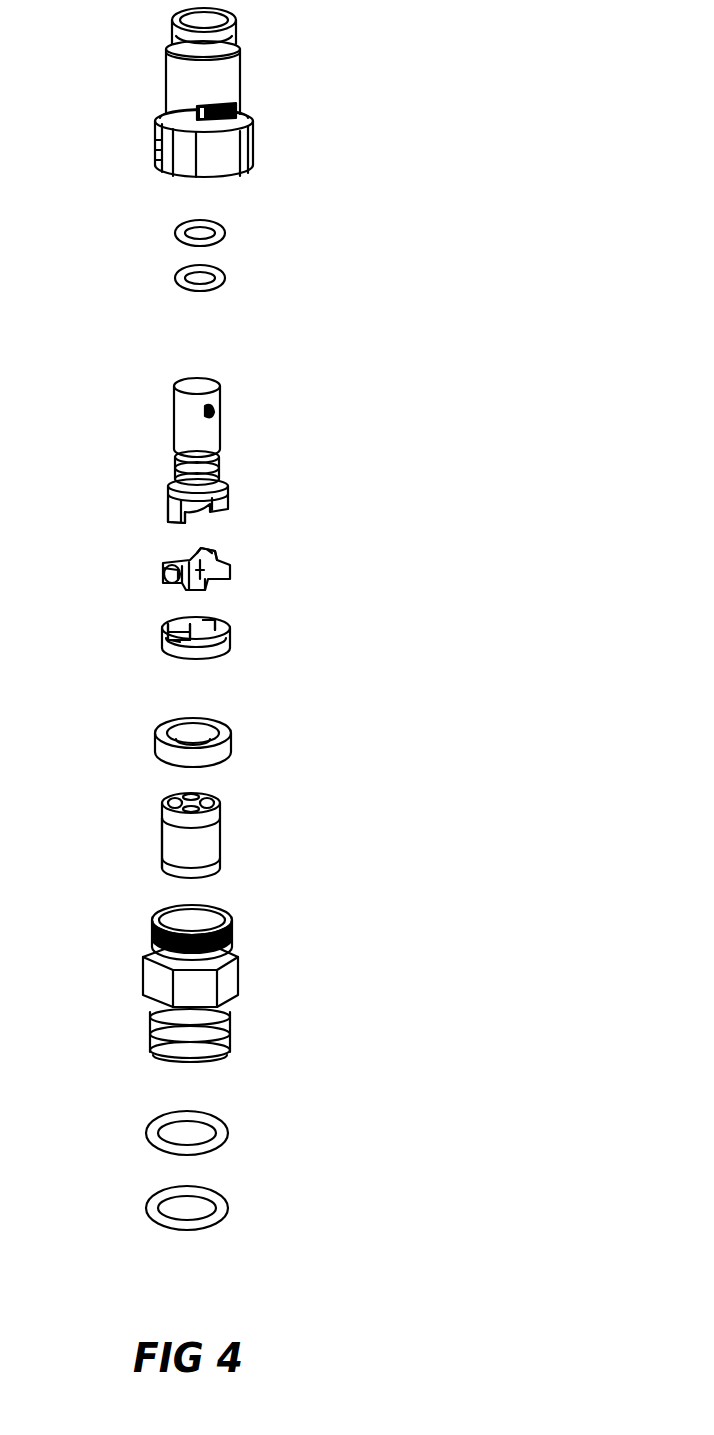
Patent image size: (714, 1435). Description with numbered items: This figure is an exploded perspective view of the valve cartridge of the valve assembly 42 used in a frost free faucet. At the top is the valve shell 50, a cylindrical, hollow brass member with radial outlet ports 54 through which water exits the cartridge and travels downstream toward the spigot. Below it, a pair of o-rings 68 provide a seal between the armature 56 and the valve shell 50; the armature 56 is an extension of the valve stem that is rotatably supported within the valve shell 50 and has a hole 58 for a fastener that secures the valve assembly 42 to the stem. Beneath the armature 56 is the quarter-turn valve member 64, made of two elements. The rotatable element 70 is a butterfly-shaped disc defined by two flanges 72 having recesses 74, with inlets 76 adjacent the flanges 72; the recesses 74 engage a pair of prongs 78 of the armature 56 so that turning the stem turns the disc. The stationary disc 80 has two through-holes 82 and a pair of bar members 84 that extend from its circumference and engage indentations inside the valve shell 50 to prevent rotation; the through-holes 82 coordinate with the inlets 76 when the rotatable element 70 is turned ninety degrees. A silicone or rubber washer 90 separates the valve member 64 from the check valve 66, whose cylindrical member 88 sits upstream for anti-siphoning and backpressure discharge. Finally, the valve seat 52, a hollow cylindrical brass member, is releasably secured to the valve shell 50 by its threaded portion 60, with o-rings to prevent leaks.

The valve assembly 42 is at (461, 218).
The valve shell 50 is at (228, 80).
The valve seat 52 is at (228, 980).
The outlet ports 54 is at (246, 106).
The armature 56 is at (213, 437).
The hole 58 is at (212, 412).
The threaded portion 60 is at (232, 933).
The valve member 64 is at (370, 522).
The check valve 66 is at (220, 838).
The o-rings 68 is at (223, 240).
The rotatable element 70 is at (165, 552).
The flanges 72 is at (210, 550).
The recesses 74 is at (218, 556).
The inlets 76 is at (201, 582).
The prongs 78 is at (172, 523).
The stationary disc 80 is at (180, 665).
The through-holes 82 is at (184, 633).
The bar members 84 is at (226, 622).
The cylindrical member 88 is at (167, 838).
The washer 90 is at (230, 750).